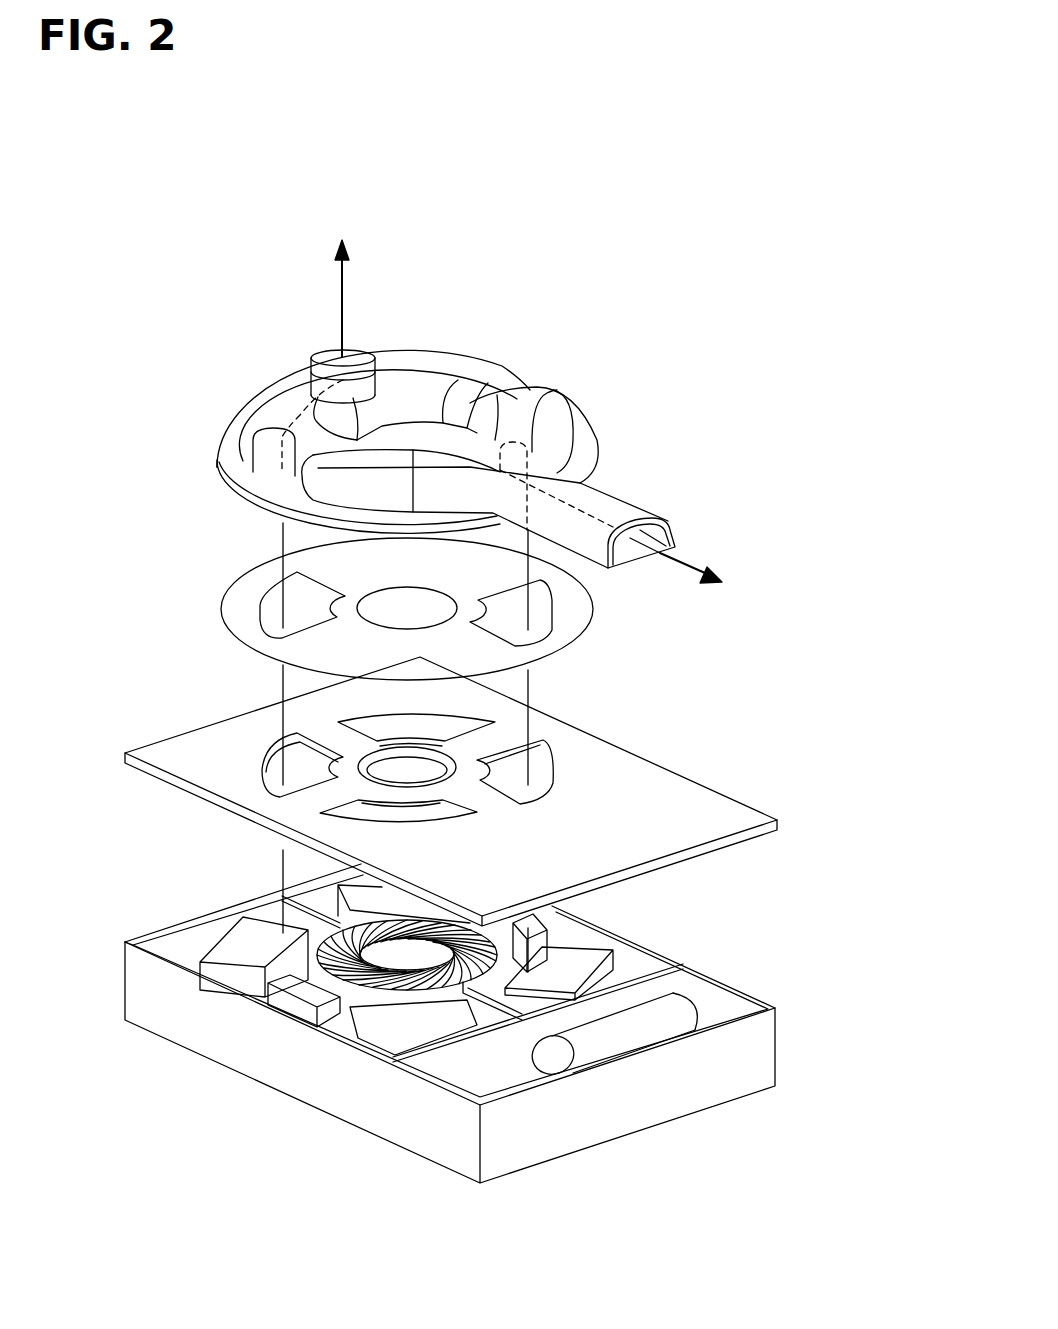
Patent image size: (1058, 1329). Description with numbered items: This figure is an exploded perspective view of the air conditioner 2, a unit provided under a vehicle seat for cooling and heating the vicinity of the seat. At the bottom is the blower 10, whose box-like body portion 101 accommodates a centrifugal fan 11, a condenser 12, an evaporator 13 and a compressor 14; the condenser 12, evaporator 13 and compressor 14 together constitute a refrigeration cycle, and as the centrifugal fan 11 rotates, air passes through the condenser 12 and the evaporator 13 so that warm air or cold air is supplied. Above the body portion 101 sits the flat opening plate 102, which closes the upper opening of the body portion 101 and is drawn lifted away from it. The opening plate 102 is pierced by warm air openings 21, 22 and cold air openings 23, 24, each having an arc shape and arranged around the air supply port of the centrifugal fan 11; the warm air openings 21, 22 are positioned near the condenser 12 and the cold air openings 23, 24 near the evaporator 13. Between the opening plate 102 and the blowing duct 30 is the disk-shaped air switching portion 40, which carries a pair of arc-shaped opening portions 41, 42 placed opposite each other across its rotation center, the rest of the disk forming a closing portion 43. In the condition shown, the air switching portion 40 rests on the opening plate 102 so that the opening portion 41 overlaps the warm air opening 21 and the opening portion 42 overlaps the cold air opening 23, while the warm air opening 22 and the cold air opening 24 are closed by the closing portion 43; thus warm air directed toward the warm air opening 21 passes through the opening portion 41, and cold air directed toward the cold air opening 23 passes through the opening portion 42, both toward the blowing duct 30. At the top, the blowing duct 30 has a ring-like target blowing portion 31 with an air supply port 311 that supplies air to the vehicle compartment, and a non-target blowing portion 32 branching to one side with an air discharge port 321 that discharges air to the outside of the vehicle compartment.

The air conditioner 2 is at (692, 230).
The blower 10 is at (795, 815).
The body portion 101 is at (582, 1140).
The opening plate 102 is at (702, 800).
The centrifugal fan 11 is at (412, 985).
The condenser 12 is at (293, 1005).
The evaporator 13 is at (590, 955).
The compressor 14 is at (635, 1042).
The warm air opening 21 is at (266, 777).
The warm air opening 22 is at (410, 800).
The cold air opening 23 is at (520, 766).
The cold air opening 24 is at (450, 726).
The blowing duct 30 is at (552, 330).
The target blowing portion 31 is at (440, 355).
The air supply port 311 is at (340, 356).
The non-target blowing portion 32 is at (555, 400).
The air discharge port 321 is at (628, 553).
The air switching portion 40 is at (226, 632).
The opening portion 41 is at (275, 603).
The opening portion 42 is at (537, 614).
The closing portion 43 is at (312, 655).